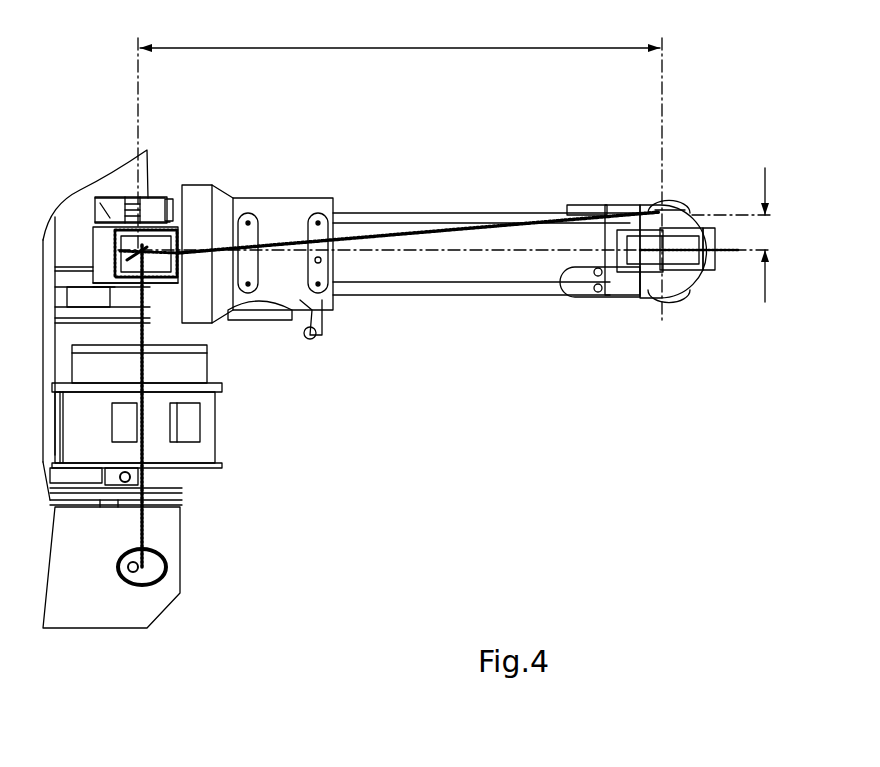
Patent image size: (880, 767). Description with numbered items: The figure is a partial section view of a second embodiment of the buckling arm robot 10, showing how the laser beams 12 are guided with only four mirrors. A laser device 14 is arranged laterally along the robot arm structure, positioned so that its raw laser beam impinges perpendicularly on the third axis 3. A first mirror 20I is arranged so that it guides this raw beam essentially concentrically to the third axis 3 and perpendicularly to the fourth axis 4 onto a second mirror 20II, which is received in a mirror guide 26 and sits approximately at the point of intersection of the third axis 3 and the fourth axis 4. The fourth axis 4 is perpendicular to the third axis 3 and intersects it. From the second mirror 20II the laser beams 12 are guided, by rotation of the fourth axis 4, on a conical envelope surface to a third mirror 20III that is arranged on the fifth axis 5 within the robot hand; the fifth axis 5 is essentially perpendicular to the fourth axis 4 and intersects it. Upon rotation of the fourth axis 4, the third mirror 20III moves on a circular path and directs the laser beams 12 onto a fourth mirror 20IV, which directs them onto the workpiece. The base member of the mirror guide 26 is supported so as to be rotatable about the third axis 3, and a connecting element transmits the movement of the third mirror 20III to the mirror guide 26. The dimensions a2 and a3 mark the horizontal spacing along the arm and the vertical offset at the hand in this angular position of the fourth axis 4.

The buckling arm robot 10 is at (292, 165).
The laser beams 12 is at (148, 366).
The laser device 14 is at (145, 607).
The third axis 3 is at (147, 412).
The fourth axis 4 is at (427, 254).
The fifth axis 5 is at (667, 313).
The mirror guide 26 is at (175, 230).
The first mirror 20I is at (167, 562).
The second mirror 20II is at (122, 198).
The third mirror 20III is at (664, 250).
The fourth mirror 20IV is at (664, 250).
The dimension a2 is at (400, 51).
The dimension a3 is at (766, 235).